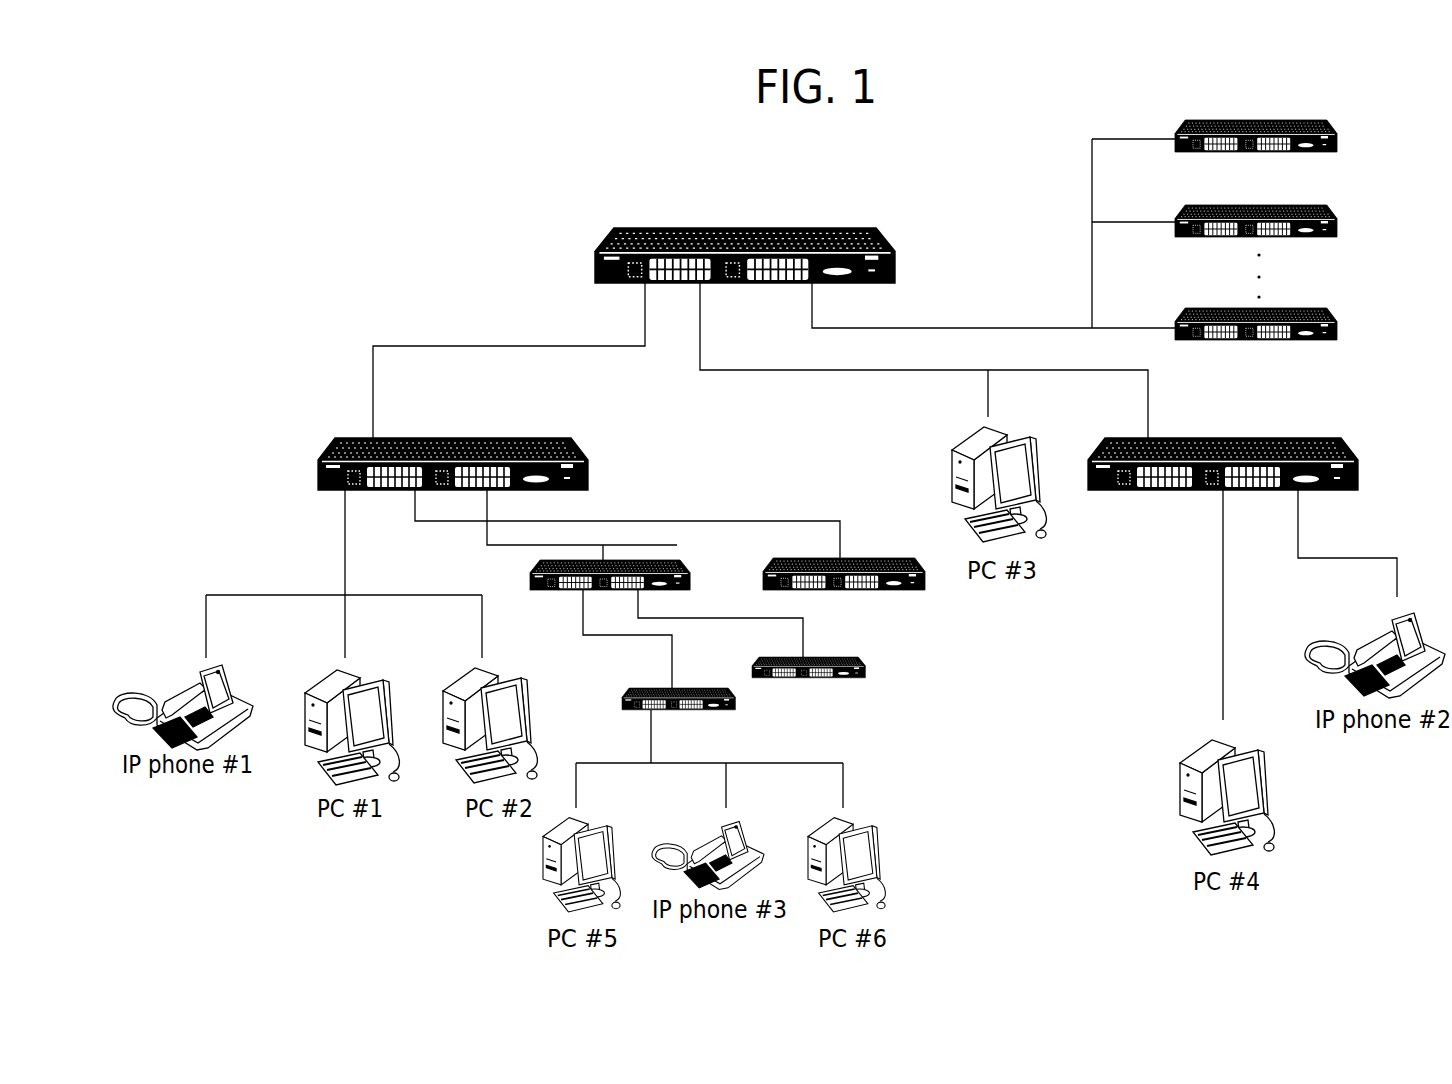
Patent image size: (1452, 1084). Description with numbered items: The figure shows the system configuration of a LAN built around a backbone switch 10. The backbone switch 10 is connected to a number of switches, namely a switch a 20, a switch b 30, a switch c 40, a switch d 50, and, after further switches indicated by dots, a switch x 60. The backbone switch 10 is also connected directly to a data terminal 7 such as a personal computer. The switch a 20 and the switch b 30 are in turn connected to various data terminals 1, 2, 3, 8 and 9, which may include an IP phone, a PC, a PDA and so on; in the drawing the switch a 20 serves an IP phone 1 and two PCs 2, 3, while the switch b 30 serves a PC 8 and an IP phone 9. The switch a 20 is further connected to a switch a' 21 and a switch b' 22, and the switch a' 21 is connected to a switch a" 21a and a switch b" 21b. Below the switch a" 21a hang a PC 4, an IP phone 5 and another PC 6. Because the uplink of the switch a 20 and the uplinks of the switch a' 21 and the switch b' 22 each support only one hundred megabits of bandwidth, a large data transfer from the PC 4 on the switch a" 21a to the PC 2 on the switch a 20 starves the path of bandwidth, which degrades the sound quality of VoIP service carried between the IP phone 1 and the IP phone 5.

The backbone switch 10 is at (793, 228).
The switch a 20 is at (497, 438).
The switch b 30 is at (1278, 438).
The switch c 40 is at (1265, 120).
The switch d 50 is at (1265, 205).
The switch x 60 is at (1265, 308).
The switch a' 21 is at (683, 563).
The switch b' 22 is at (915, 561).
The switch a" 21a is at (693, 688).
The switch b" 21b is at (845, 657).
The IP Phone # 1 is at (225, 681).
The PC #1 2 is at (372, 689).
The data terminal 3 is at (512, 689).
The PC #5 4 is at (584, 825).
The IP Phone #3 5 is at (740, 831).
The data terminal 6 is at (850, 824).
The data terminal 7 is at (1024, 446).
The data terminal 8 is at (1228, 748).
The data terminal 9 is at (1419, 628).